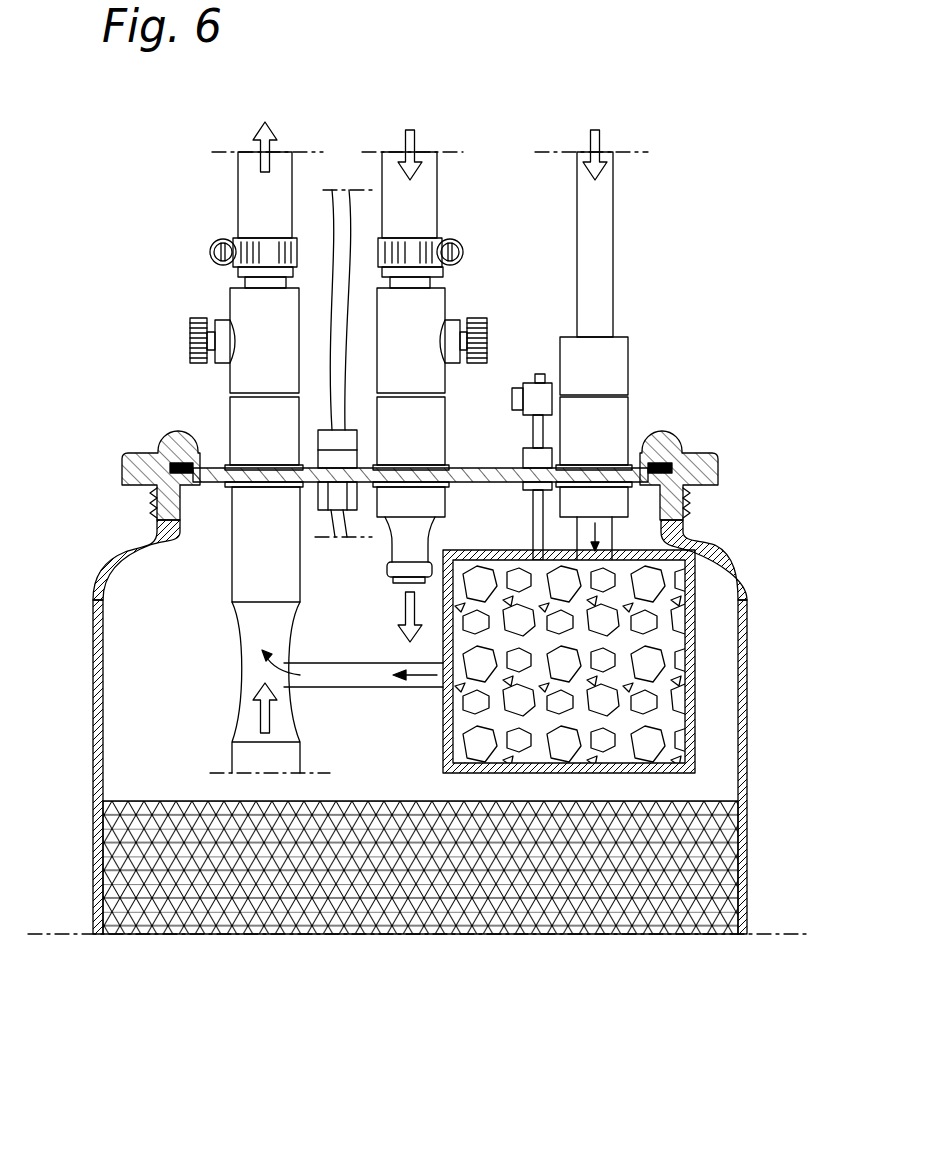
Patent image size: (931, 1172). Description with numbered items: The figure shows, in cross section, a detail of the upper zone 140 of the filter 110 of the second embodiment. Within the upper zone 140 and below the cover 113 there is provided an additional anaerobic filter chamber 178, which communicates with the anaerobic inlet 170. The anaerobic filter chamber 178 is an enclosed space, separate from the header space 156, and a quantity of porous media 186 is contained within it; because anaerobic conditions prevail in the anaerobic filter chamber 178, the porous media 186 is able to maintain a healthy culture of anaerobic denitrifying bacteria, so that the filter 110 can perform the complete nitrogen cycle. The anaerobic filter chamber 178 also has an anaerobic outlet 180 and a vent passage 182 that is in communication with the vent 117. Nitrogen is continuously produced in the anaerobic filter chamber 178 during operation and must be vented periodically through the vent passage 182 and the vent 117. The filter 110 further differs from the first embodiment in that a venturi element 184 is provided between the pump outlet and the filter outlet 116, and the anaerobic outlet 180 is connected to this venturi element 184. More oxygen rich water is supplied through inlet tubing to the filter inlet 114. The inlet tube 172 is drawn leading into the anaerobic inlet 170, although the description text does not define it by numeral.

The filter 110 is at (125, 329).
The cover 113 is at (220, 473).
The filter inlet 114 is at (432, 437).
The filter outlet 116 is at (245, 430).
The vent 117 is at (528, 392).
The upper zone 140 is at (93, 775).
The header space 156 is at (165, 575).
The anaerobic inlet 170 is at (617, 428).
The inlet tube 172 is at (592, 233).
The anaerobic filter chamber 178 is at (697, 688).
The anaerobic outlet 180 is at (345, 668).
The vent passage 182 is at (537, 510).
The venturi element 184 is at (245, 663).
The porous media 186 is at (620, 650).